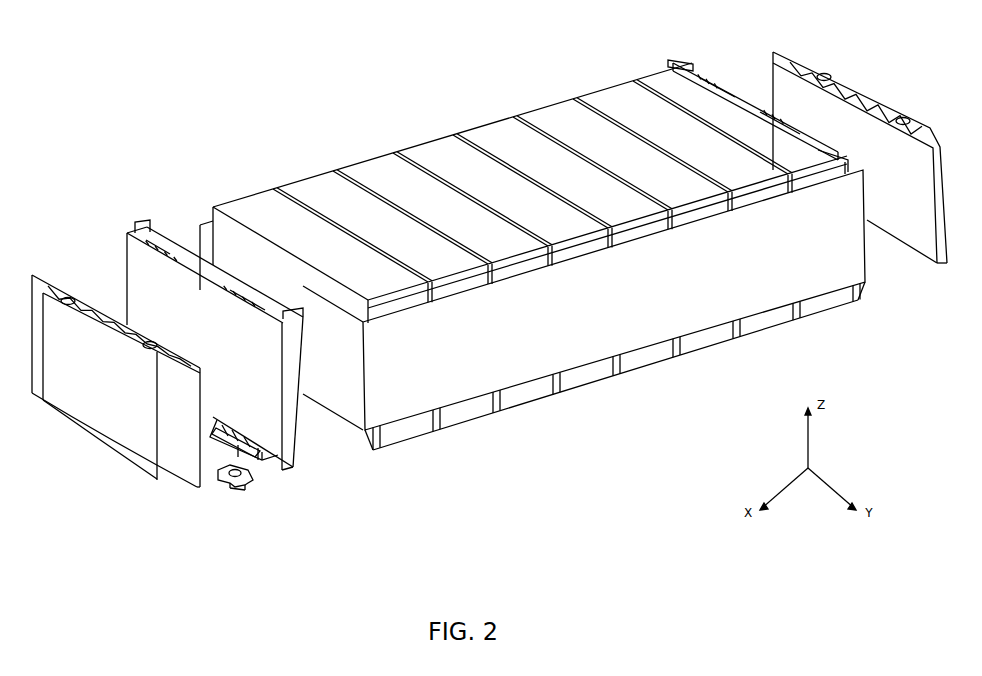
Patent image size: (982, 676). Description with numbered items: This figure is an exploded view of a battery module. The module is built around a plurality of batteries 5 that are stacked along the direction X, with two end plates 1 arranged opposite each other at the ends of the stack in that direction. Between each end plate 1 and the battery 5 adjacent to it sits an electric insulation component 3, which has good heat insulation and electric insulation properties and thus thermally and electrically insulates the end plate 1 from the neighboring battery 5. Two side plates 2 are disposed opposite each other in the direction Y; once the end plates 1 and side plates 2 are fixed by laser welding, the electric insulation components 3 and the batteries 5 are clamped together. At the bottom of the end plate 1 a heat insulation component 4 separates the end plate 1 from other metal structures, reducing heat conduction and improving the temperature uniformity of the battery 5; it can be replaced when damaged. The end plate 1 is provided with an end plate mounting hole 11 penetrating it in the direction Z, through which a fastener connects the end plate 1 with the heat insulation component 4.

The end plate 1 is at (75, 416).
The end plate mounting hole 11 is at (70, 297).
The side plate 2 is at (577, 357).
The electric insulation component 3 is at (128, 234).
The heat insulation component 4 is at (231, 488).
The battery 5 is at (496, 128).